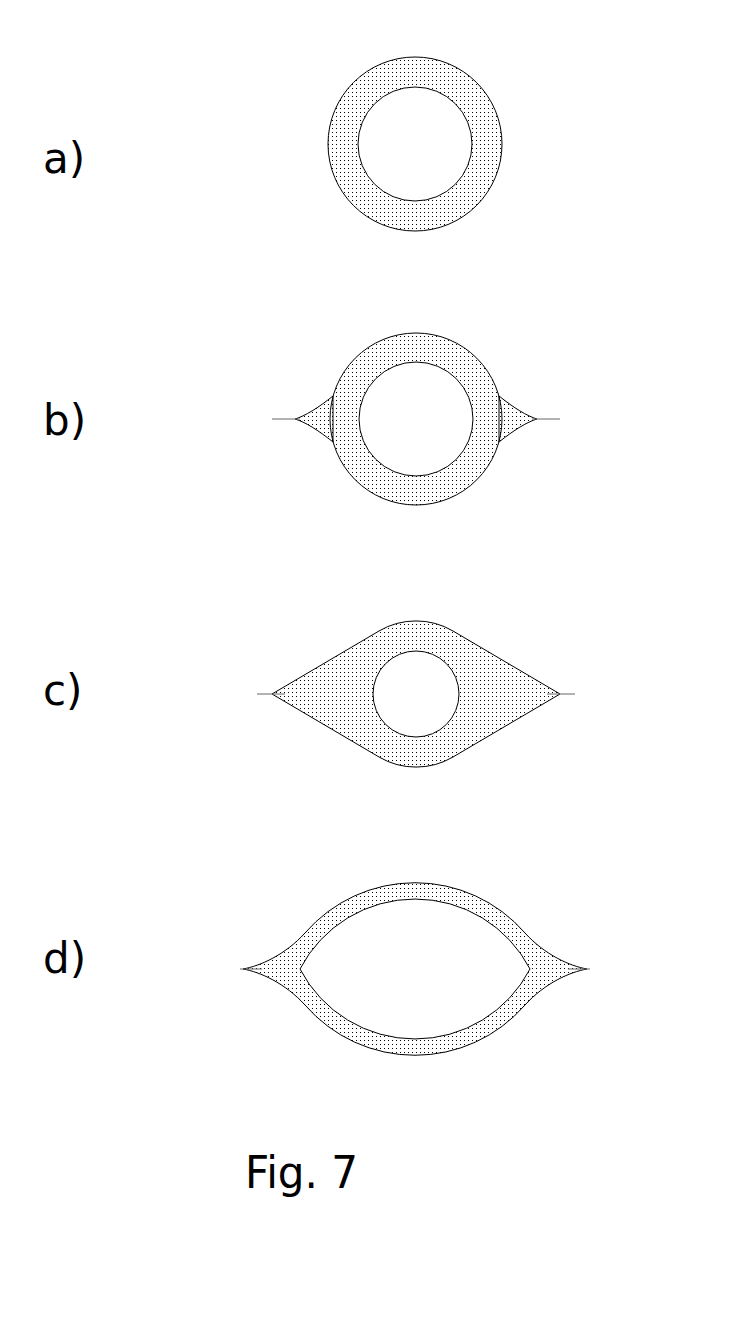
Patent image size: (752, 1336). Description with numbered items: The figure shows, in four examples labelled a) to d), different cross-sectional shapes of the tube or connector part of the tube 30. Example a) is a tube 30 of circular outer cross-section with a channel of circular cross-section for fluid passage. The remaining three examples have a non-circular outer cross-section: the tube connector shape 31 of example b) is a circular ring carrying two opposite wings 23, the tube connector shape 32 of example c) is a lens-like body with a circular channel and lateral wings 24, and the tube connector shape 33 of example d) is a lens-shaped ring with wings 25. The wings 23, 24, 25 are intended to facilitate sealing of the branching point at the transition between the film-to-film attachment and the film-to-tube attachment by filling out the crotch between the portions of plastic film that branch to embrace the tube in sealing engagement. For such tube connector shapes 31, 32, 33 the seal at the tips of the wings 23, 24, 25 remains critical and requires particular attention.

The tube 30 is at (458, 87).
The tube connector shape 31 is at (460, 365).
The wings 23 is at (305, 418).
The tube connector shape 32 is at (460, 640).
The wings 24 is at (269, 692).
The tube connector shape 33 is at (460, 898).
The wings 25 is at (266, 968).